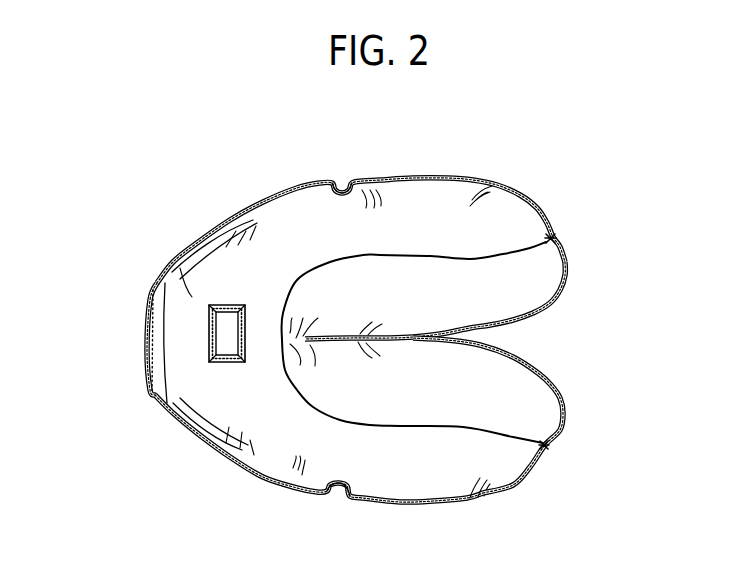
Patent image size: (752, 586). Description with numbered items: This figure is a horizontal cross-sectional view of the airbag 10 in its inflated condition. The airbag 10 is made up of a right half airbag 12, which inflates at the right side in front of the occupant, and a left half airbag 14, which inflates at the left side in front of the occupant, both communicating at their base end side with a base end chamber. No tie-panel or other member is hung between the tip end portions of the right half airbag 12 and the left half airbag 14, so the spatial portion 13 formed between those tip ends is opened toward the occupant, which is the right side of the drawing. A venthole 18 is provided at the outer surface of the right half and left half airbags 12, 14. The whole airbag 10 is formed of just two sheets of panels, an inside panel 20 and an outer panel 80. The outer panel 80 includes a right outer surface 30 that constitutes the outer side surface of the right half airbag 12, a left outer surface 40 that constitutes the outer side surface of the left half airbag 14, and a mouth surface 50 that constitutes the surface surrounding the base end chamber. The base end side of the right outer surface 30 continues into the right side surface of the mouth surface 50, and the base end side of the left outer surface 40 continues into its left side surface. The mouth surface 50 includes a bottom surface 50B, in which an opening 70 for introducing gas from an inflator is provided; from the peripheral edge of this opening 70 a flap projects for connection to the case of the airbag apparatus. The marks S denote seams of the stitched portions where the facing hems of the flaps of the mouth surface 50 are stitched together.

The airbag 10 is at (588, 245).
The right half airbag 12 is at (544, 188).
The spatial portion 13 is at (493, 340).
The left half airbag 14 is at (580, 440).
The venthole 18 is at (344, 182).
The inside panel 20 is at (555, 389).
The right outer surface 30 is at (452, 178).
The left outer surface 40 is at (497, 497).
The mouth surface 50 is at (203, 443).
The bottom surface 50B is at (175, 264).
The opening 70 is at (225, 348).
The outer panel 80 is at (467, 526).
The seam S is at (550, 238).